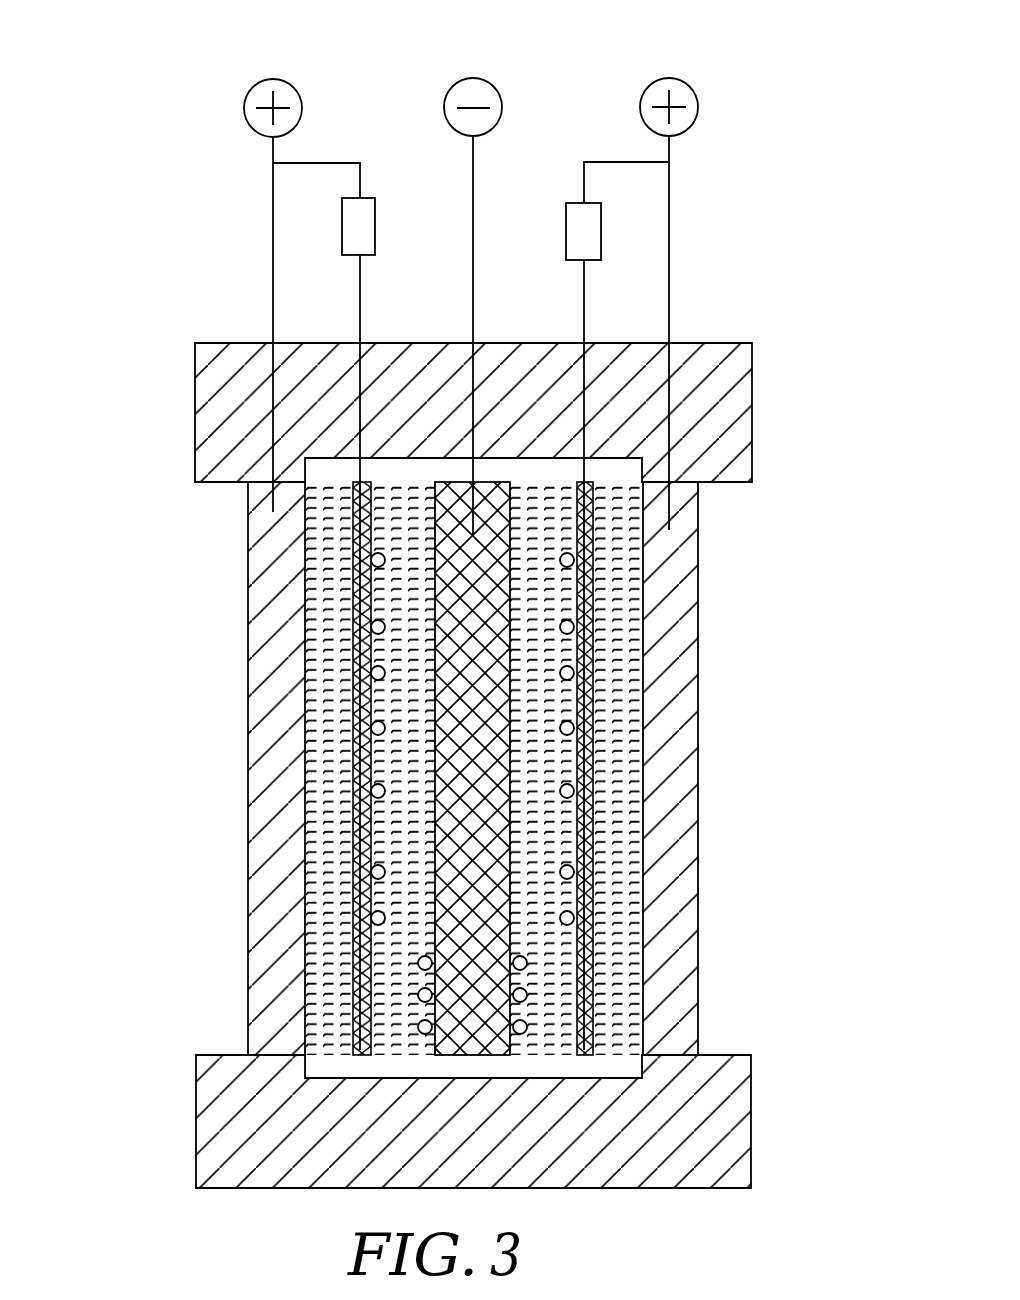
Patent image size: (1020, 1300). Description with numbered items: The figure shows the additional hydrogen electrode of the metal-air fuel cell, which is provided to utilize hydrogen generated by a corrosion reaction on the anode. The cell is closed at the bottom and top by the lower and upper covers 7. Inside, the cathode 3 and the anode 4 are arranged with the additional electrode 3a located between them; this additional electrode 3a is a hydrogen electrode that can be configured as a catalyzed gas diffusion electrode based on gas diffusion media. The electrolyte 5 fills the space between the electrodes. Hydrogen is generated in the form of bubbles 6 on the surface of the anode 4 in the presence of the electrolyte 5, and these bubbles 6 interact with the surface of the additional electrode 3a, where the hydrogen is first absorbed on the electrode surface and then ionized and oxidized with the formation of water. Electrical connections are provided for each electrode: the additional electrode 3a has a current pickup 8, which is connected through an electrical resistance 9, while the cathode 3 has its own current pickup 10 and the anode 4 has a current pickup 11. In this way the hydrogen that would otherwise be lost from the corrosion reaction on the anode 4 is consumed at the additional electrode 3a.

The cathode 3 is at (288, 566).
The additional electrode 3a is at (358, 930).
The anode 4 is at (467, 642).
The electrolyte 5 is at (605, 718).
The bubbles 6 is at (583, 817).
The lower and upper covers 7 is at (707, 387).
The current pickup 8 is at (358, 340).
The electrical resistance 9 is at (355, 223).
The current pickup 10 is at (273, 150).
The current pickup 11 is at (475, 181).